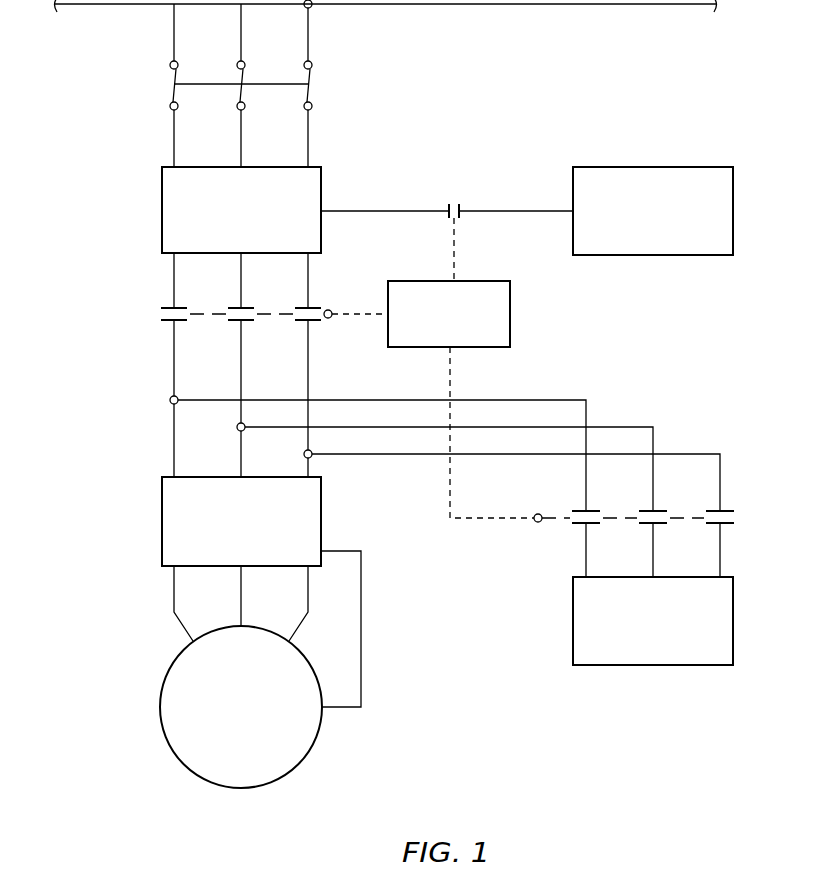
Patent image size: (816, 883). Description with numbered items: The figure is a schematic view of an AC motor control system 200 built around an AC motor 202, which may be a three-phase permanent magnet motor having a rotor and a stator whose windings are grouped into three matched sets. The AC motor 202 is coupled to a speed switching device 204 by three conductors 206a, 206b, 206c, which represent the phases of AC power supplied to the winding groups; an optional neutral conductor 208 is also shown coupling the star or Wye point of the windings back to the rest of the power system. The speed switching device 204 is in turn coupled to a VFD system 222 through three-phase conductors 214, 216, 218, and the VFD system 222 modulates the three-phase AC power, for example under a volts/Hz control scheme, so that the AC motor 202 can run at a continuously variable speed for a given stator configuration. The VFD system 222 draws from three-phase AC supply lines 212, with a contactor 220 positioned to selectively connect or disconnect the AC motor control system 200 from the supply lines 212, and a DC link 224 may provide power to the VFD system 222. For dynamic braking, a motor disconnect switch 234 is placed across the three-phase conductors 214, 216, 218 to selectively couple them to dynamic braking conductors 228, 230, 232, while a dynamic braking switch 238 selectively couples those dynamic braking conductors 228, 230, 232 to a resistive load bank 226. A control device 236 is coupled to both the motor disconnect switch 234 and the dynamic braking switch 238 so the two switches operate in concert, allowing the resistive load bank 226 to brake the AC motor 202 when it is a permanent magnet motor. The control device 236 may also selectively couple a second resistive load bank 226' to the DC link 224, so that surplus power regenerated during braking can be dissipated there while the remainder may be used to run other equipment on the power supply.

The AC motor control system 200 is at (115, 251).
The AC motor 202 is at (318, 738).
The speed switching device 204 is at (160, 504).
The conductor 206a is at (174, 585).
The conductor 206b is at (241, 603).
The conductor 206c is at (305, 622).
The neutral conductor 208 is at (362, 627).
The three-phase AC supply lines 212 is at (615, 5).
The three-phase conductor 214 is at (174, 289).
The three-phase conductor 216 is at (240, 270).
The three-phase conductor 218 is at (310, 266).
The contactor 220 is at (172, 90).
The VFD system 222 is at (322, 178).
The DC link 224 is at (428, 200).
The resistive load bank 226 is at (664, 649).
The resistive load bank 226' is at (667, 179).
The dynamic braking conductor 228 is at (568, 400).
The dynamic braking conductor 230 is at (641, 427).
The dynamic braking conductor 232 is at (703, 453).
The motor disconnect switch 234 is at (332, 299).
The control device 236 is at (510, 312).
The dynamic braking switch 238 is at (736, 518).